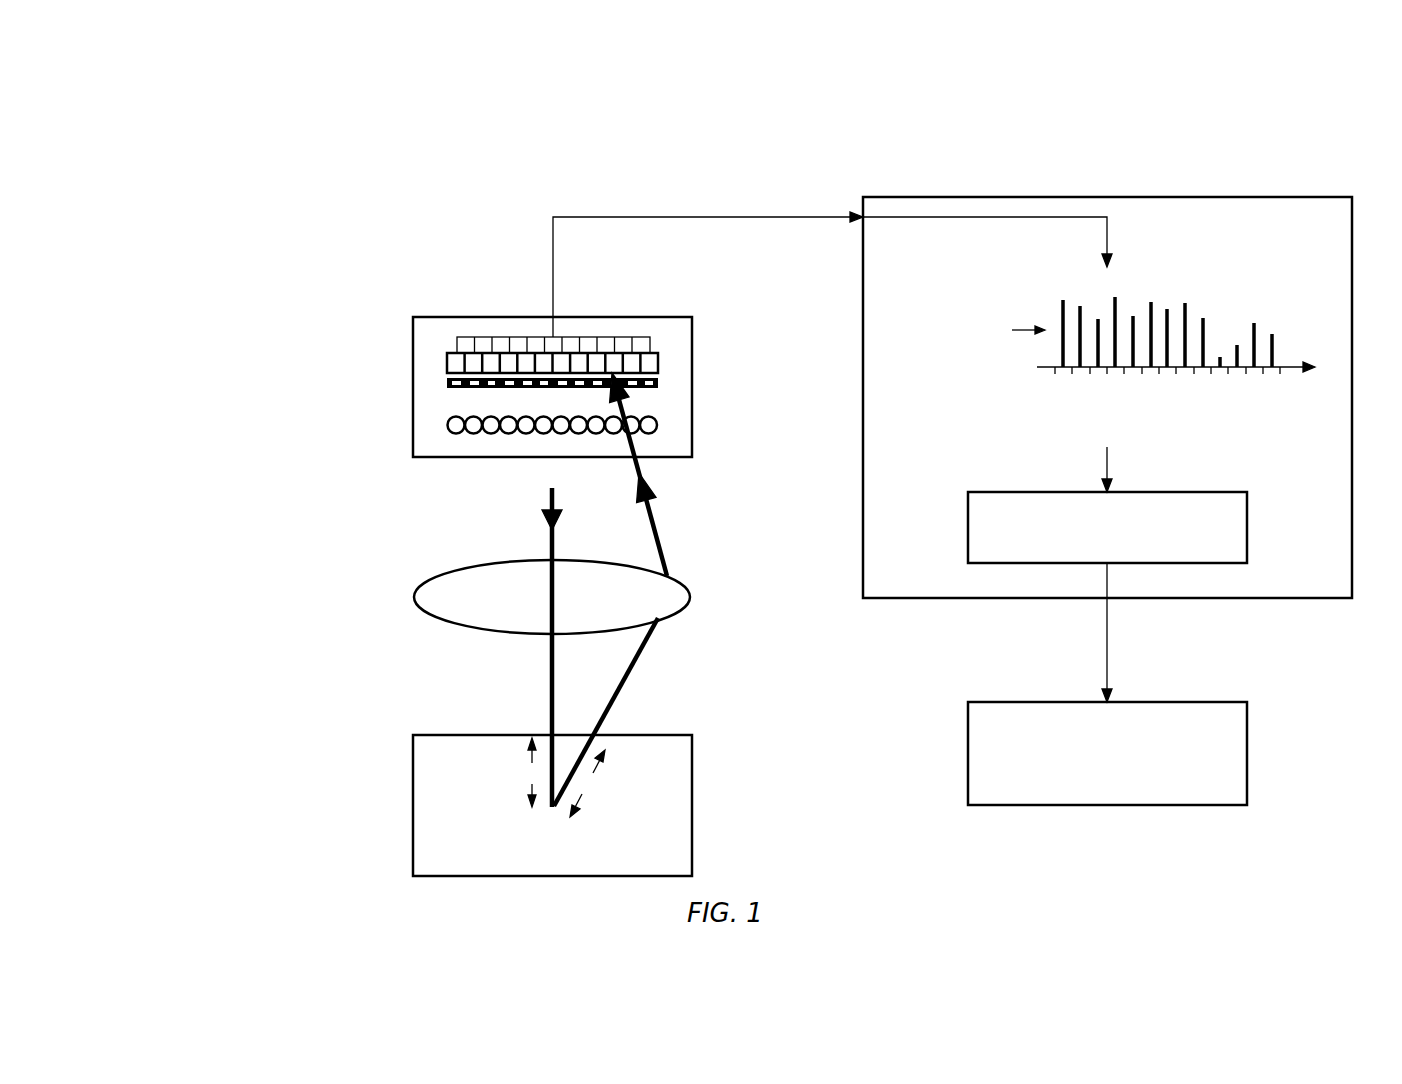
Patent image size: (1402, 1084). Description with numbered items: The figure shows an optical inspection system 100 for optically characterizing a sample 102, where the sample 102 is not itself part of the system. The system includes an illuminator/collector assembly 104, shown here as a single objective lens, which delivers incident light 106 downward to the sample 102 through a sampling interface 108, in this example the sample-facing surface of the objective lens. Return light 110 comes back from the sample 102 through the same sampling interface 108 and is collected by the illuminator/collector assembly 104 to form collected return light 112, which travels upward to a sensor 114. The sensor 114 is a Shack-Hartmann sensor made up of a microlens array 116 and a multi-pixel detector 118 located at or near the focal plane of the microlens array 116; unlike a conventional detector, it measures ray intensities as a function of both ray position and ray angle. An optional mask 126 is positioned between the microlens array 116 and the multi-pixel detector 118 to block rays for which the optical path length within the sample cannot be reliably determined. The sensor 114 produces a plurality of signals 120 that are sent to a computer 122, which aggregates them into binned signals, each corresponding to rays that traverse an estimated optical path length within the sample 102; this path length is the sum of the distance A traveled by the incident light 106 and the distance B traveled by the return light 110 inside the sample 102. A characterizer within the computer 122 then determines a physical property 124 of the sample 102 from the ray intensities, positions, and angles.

The optical inspection system 100 is at (296, 253).
The sample 102 is at (413, 803).
The illuminator/collector assembly 104 is at (414, 597).
The incident light 106 is at (552, 683).
The sampling interface 108 is at (675, 612).
The return light 110 is at (620, 686).
The collected return light 112 is at (657, 534).
The sensor 114 is at (450, 317).
The microlens array 116 is at (658, 425).
The multi-pixel detector 118 is at (658, 365).
The signals 120 is at (710, 217).
The computer 122 is at (1108, 197).
The physical property 124 is at (1107, 747).
The mask 126 is at (447, 382).